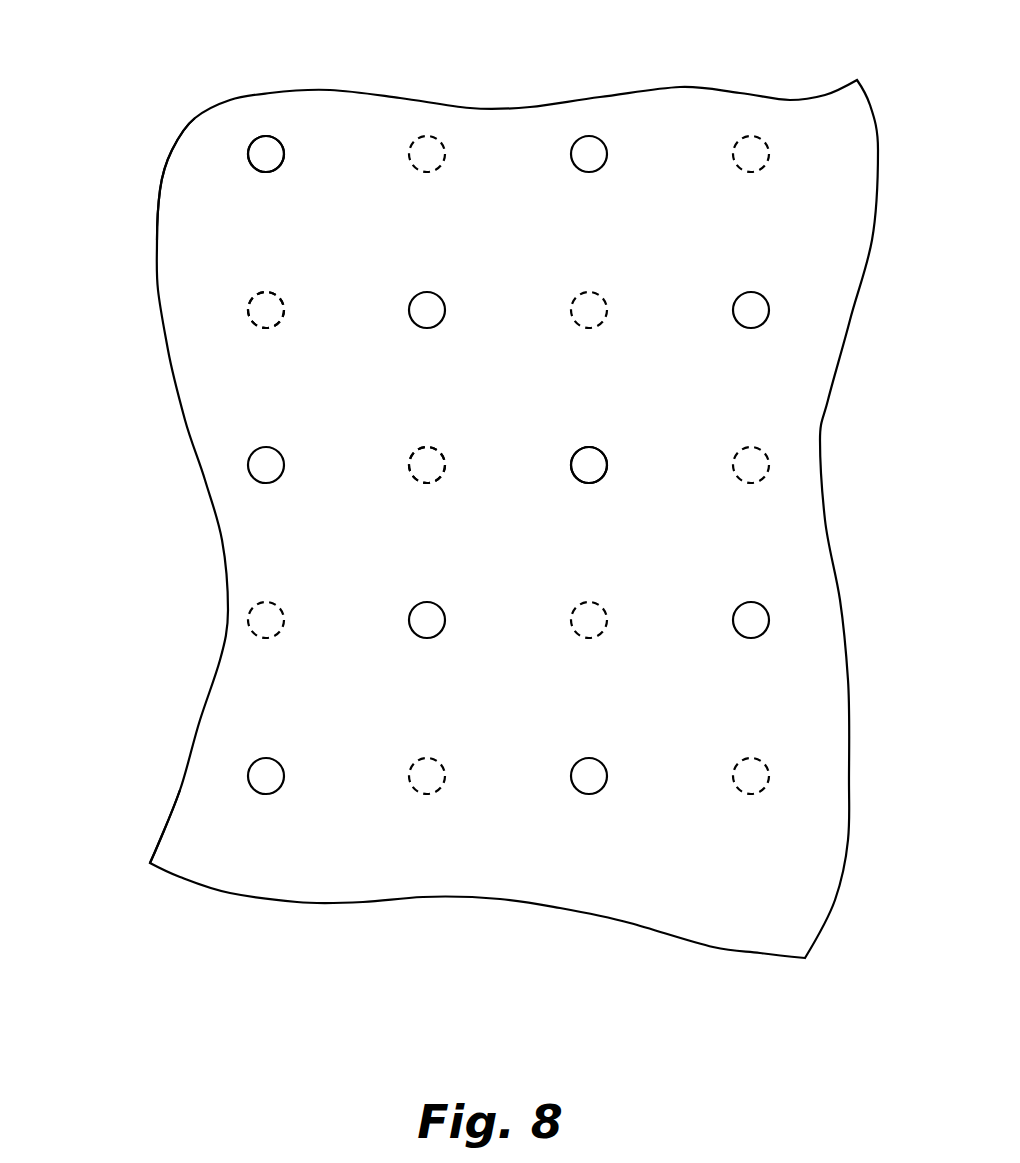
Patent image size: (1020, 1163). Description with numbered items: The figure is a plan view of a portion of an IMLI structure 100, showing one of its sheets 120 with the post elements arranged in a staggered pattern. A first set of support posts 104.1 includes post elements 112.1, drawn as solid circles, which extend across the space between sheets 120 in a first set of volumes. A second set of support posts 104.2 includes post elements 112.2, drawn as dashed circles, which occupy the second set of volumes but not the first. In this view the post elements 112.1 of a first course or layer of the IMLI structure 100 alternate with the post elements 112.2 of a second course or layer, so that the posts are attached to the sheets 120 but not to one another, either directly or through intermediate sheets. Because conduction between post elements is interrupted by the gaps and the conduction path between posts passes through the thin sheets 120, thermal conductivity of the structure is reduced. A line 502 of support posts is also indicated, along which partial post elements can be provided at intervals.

The IMLI structure 100 is at (128, 178).
The sheet 120 is at (340, 120).
The line of support posts 502 is at (265, 870).
The first set of support posts 104.1 is at (250, 134).
The second set of support posts 104.2 is at (260, 290).
The post element of first course 112.1 is at (268, 136).
The post element of second course 112.2 is at (427, 135).